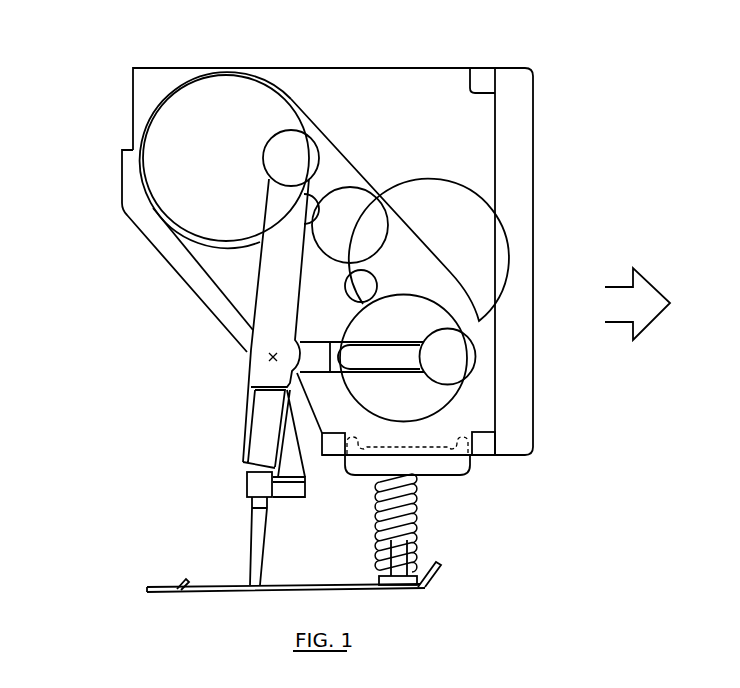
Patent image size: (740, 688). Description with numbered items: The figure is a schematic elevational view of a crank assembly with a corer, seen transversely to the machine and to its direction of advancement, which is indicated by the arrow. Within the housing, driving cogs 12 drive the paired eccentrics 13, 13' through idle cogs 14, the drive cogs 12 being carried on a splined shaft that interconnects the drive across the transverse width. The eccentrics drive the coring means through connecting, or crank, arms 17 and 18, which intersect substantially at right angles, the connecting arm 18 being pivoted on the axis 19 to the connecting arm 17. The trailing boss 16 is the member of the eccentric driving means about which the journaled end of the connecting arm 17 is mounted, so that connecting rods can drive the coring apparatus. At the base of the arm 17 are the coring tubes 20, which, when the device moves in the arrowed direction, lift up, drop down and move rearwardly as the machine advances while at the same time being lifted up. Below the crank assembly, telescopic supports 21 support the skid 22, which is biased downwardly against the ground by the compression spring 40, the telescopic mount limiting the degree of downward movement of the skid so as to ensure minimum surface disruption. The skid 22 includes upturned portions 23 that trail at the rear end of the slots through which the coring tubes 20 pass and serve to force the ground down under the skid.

The eccentric 13' is at (226, 125).
The trailing boss 16 is at (303, 155).
The idle cog 14 is at (305, 200).
The driving cog 12 is at (370, 215).
The eccentric 13 is at (411, 331).
The connecting arm 17 is at (275, 275).
The pivot axis 19 is at (268, 356).
The connecting arm 18 is at (372, 357).
The coring tube 20 is at (250, 537).
The telescopic support 21 is at (398, 512).
The skid 22 is at (362, 590).
The upturned portion 23 is at (181, 583).
The compression spring 40 is at (403, 555).